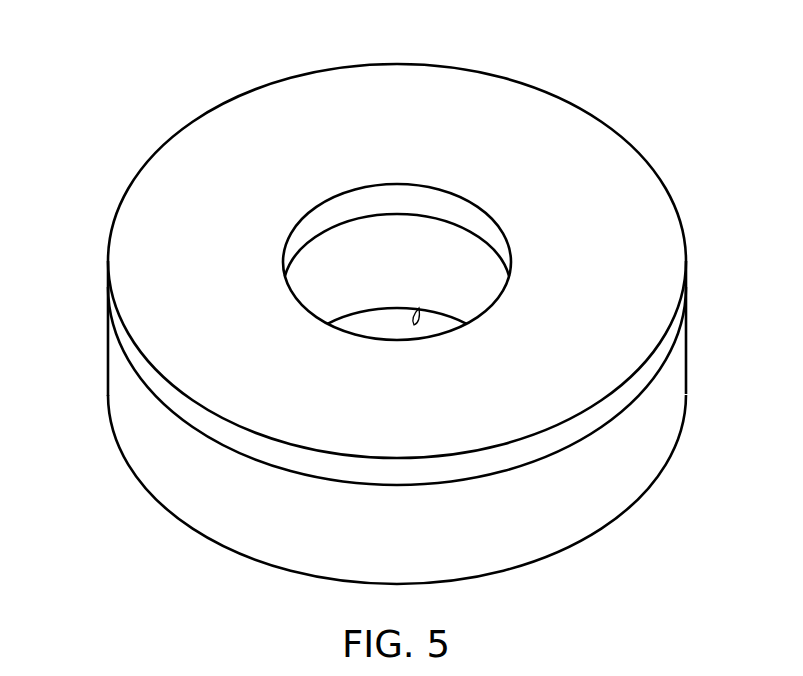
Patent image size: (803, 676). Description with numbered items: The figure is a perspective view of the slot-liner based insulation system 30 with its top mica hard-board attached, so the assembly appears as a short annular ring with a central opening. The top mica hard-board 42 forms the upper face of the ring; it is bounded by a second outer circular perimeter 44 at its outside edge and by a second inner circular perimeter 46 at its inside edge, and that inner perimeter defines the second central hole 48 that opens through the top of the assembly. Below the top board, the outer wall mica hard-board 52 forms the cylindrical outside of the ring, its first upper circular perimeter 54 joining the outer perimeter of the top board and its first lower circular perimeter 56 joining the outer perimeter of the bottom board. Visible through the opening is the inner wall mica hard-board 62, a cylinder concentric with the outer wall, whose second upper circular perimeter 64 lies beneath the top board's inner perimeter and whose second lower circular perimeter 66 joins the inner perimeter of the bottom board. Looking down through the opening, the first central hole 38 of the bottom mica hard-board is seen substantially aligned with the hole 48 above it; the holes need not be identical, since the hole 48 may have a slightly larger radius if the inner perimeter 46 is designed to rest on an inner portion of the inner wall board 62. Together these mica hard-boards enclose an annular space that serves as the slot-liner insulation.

The slot-liner based insulation system 30 is at (380, 303).
The first central hole 38 is at (632, 185).
The top mica hard-board 42 is at (377, 261).
The second outer circular perimeter 44 is at (160, 148).
The second inner circular perimeter 46 is at (425, 235).
The second central hole 48 is at (370, 195).
The outer wall mica hard-board 52 is at (361, 422).
The first upper circular perimeter 54 is at (128, 360).
The first lower circular perimeter 56 is at (175, 475).
The inner wall mica hard-board 62 is at (487, 272).
The second upper circular perimeter 64 is at (493, 248).
The second lower circular perimeter 66 is at (419, 308).